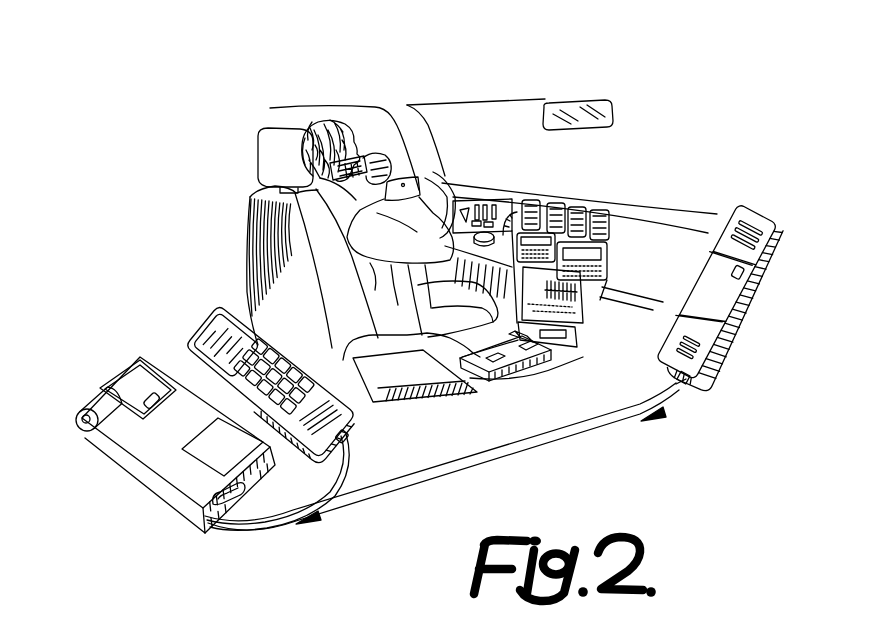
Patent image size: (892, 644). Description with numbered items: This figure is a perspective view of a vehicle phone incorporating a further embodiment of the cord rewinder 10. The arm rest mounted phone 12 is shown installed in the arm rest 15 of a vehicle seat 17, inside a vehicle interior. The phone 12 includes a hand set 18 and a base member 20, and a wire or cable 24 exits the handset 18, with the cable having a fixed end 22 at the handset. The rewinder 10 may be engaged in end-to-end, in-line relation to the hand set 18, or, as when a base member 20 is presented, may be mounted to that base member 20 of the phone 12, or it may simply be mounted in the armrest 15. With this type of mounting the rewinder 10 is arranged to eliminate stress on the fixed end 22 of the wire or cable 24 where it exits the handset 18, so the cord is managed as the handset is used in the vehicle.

The cord rewinder 10 is at (141, 502).
The arm rest mounted phone 12 is at (148, 348).
The arm rest 15 is at (560, 363).
The vehicle seat 17 is at (404, 396).
The hand set 18 is at (232, 298).
The base member 20 is at (100, 378).
The fixed end 22 is at (682, 385).
The wire or cable 24 is at (478, 457).